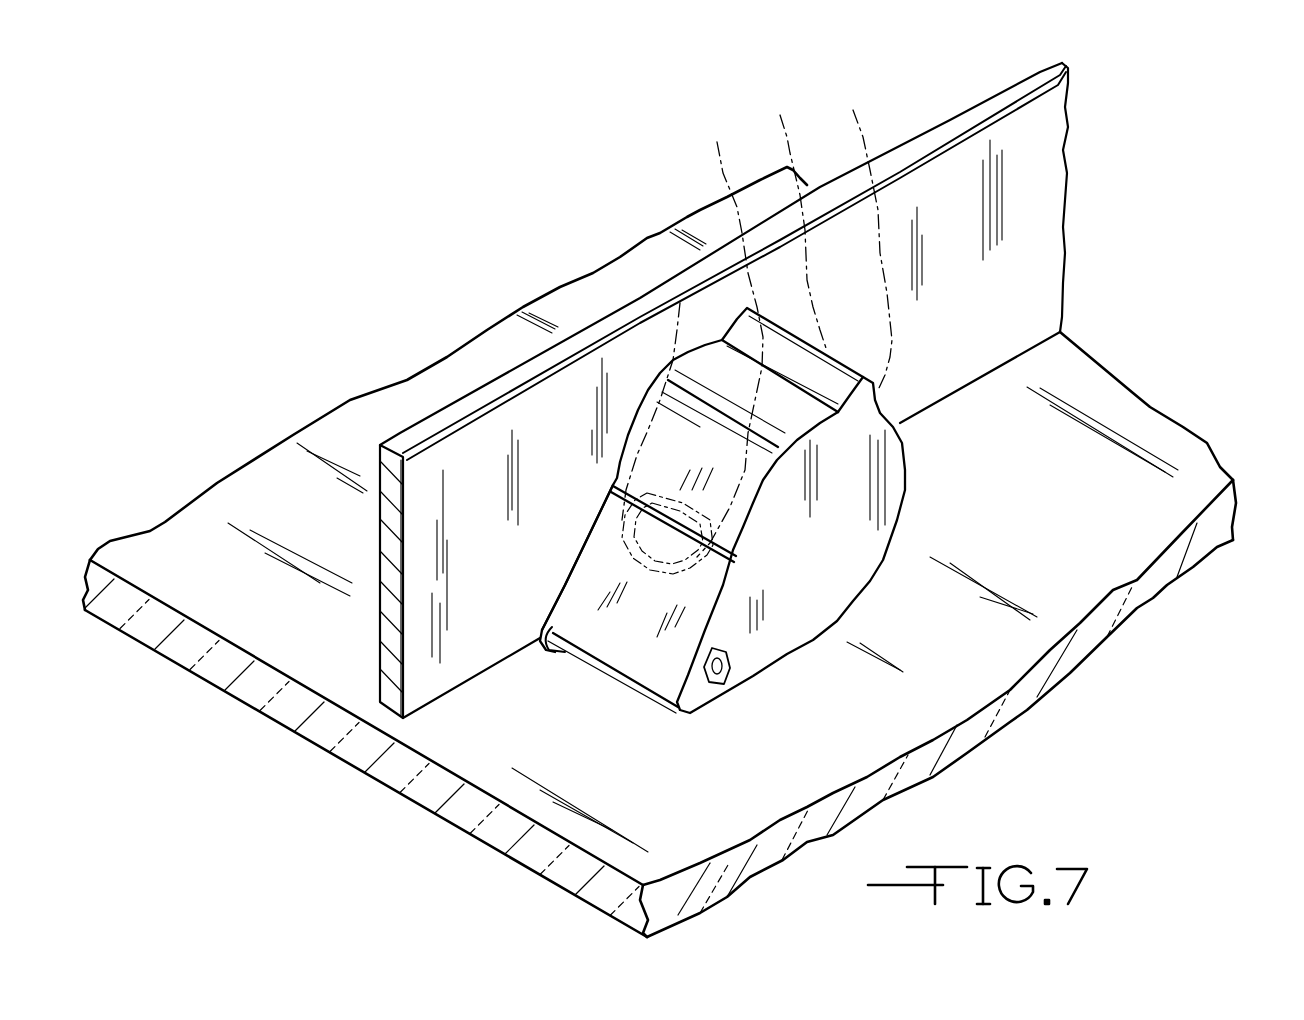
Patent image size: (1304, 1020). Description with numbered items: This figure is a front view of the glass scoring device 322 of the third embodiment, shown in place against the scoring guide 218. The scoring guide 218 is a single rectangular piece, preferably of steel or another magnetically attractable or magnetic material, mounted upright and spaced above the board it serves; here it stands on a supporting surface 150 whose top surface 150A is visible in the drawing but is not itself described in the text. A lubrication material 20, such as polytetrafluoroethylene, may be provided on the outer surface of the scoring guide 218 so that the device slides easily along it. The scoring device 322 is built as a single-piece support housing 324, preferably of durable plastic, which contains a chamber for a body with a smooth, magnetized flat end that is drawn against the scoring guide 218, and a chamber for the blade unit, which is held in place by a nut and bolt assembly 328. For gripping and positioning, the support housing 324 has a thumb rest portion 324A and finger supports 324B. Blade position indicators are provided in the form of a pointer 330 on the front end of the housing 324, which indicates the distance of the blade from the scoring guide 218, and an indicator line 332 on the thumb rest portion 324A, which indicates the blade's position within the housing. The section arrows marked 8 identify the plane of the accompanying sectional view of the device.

The lubrication material 20 is at (775, 384).
The scoring guide 218 is at (734, 255).
The platform 150 is at (686, 552).
The platform top surface 150A is at (690, 526).
The section line 8- 8 is at (410, 342).
The scoring device 322 is at (867, 480).
The support housing 324 is at (776, 549).
The thumb rest portion 324A is at (626, 651).
The finger supports 324B is at (887, 346).
The nut and bolt assembly 328 is at (753, 698).
The pointer 330 is at (533, 688).
The indicator line 332 is at (720, 538).